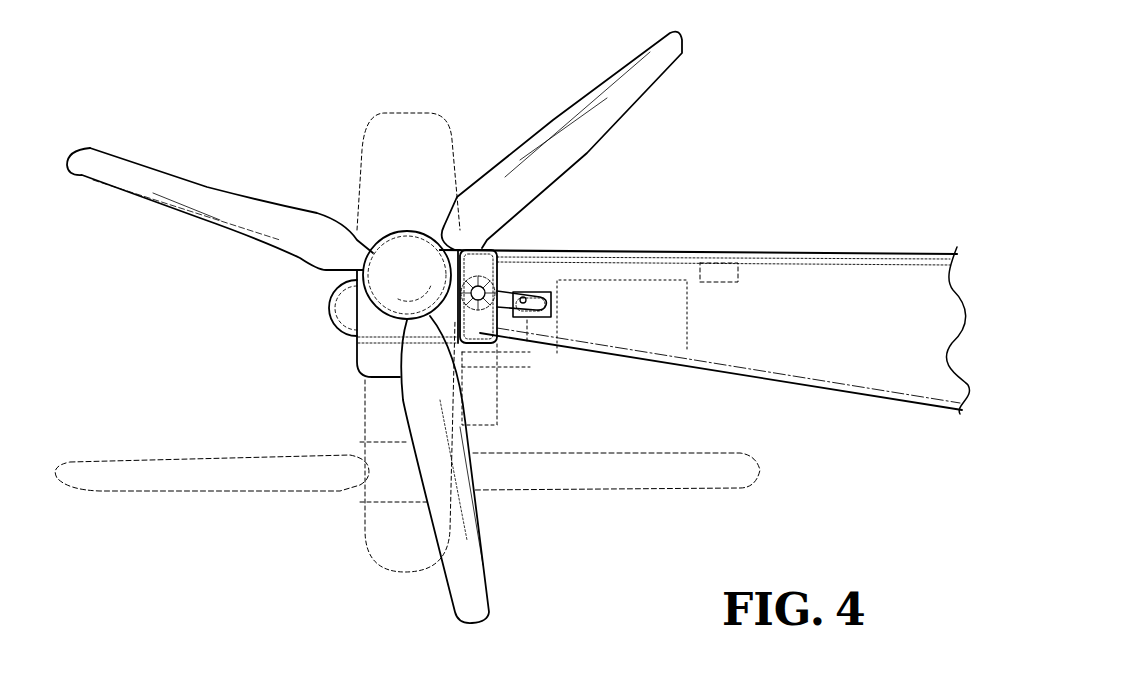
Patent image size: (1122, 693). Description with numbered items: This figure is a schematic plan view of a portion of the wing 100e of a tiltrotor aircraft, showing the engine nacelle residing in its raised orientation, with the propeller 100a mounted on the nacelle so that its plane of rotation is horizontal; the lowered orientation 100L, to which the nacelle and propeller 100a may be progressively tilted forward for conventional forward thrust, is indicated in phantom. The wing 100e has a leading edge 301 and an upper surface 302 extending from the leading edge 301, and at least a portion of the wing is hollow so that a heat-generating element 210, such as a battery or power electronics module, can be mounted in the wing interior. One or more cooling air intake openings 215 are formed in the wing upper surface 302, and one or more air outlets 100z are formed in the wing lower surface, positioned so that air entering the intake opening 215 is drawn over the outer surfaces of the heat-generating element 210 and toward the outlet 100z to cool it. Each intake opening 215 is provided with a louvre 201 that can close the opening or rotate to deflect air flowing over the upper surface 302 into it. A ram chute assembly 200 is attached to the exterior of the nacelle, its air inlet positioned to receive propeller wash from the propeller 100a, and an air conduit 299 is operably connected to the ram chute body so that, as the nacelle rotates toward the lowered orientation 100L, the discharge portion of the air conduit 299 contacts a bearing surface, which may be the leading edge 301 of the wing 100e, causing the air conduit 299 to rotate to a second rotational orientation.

The propeller 100a is at (405, 267).
The wing 100e is at (750, 250).
The air outlet 100z is at (718, 262).
The lowered orientation 100L is at (286, 517).
The ram chute assembly 200 is at (497, 258).
The louvre 201 is at (545, 292).
The heat-generating element 210 is at (643, 340).
The cooling air intake opening 215 is at (543, 317).
The air conduit 299 is at (523, 300).
The leading edge 301 is at (910, 403).
The upper surface 302 is at (853, 322).